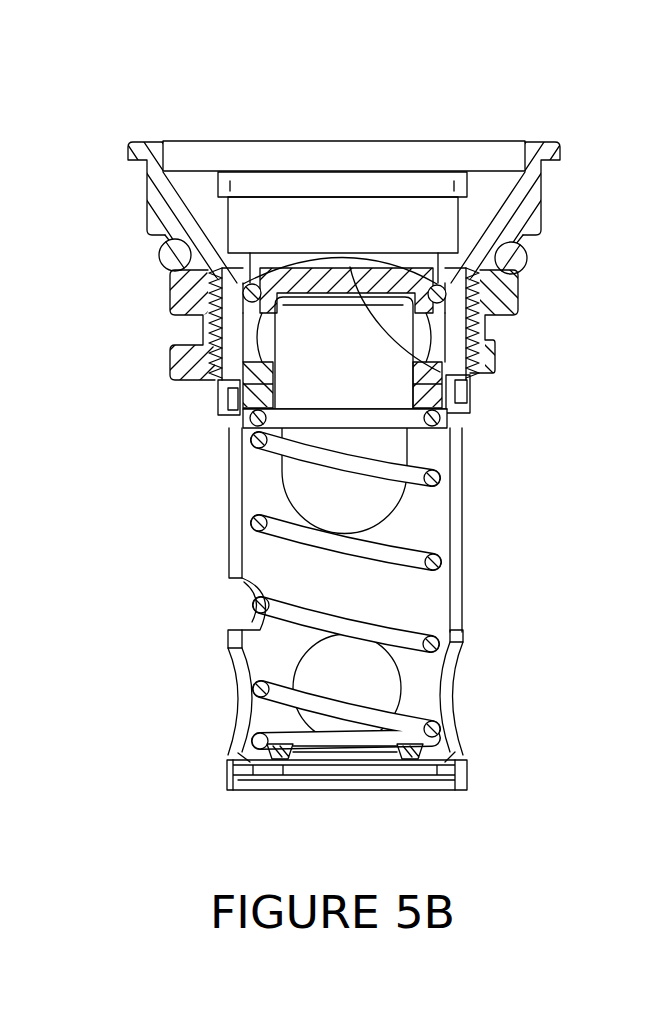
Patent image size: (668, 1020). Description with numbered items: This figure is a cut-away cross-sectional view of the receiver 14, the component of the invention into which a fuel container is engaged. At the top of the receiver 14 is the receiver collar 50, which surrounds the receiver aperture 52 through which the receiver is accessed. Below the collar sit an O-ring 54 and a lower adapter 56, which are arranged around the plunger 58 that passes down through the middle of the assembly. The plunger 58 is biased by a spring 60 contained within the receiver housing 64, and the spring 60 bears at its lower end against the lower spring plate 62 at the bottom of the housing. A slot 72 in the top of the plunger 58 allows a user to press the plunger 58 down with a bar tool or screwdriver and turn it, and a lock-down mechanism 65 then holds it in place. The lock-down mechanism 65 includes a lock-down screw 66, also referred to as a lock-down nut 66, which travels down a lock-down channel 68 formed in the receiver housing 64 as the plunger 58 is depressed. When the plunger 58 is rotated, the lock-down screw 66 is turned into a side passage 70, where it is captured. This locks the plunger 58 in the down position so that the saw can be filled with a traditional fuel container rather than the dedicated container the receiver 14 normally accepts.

The receiver 14 is at (195, 113).
The receiver aperture 52 is at (340, 125).
The slot 72 is at (345, 165).
The receiver collar 50 is at (178, 205).
The O-ring 54 is at (159, 258).
The lower adapter 56 is at (190, 351).
The plunger 58 is at (472, 378).
The lock-down mechanism 65 is at (160, 402).
The lock-down screw 66 is at (215, 400).
The lock-down channel 68 is at (470, 452).
The receiver housing 64 is at (420, 594).
The spring 60 is at (245, 600).
The side passage 70 is at (222, 612).
The lower spring plate 62 is at (466, 752).